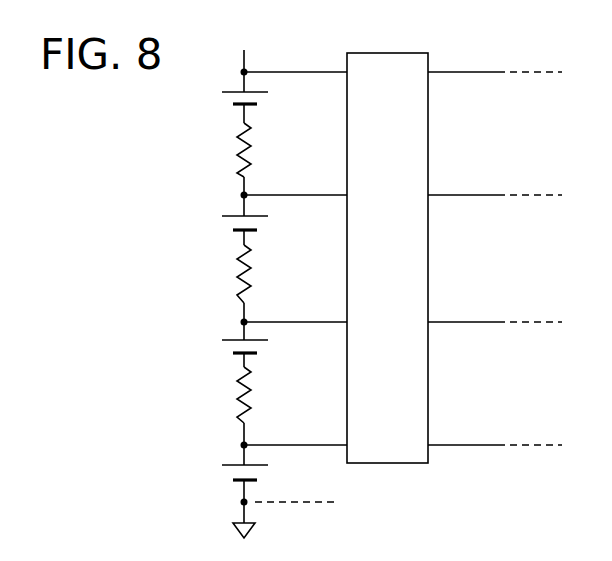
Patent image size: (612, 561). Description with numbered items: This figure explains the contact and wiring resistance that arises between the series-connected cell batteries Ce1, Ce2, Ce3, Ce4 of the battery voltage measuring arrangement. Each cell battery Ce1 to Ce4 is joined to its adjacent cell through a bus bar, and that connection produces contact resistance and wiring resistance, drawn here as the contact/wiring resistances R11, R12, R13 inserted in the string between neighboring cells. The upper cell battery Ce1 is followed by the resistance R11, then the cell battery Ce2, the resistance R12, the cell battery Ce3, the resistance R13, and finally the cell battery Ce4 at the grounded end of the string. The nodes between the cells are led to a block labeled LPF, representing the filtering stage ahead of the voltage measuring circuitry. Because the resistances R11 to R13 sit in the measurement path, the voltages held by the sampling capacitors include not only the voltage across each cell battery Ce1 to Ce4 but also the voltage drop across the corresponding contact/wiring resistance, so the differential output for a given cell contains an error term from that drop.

The cell battery Ce1 is at (231, 105).
The cell battery Ce2 is at (231, 231).
The cell battery Ce3 is at (231, 354).
The cell battery Ce4 is at (231, 481).
The contact/wiring resistance R11 is at (255, 144).
The contact/wiring resistance R12 is at (255, 268).
The contact/wiring resistance R13 is at (255, 392).
The low-pass filter LPF is at (387, 258).